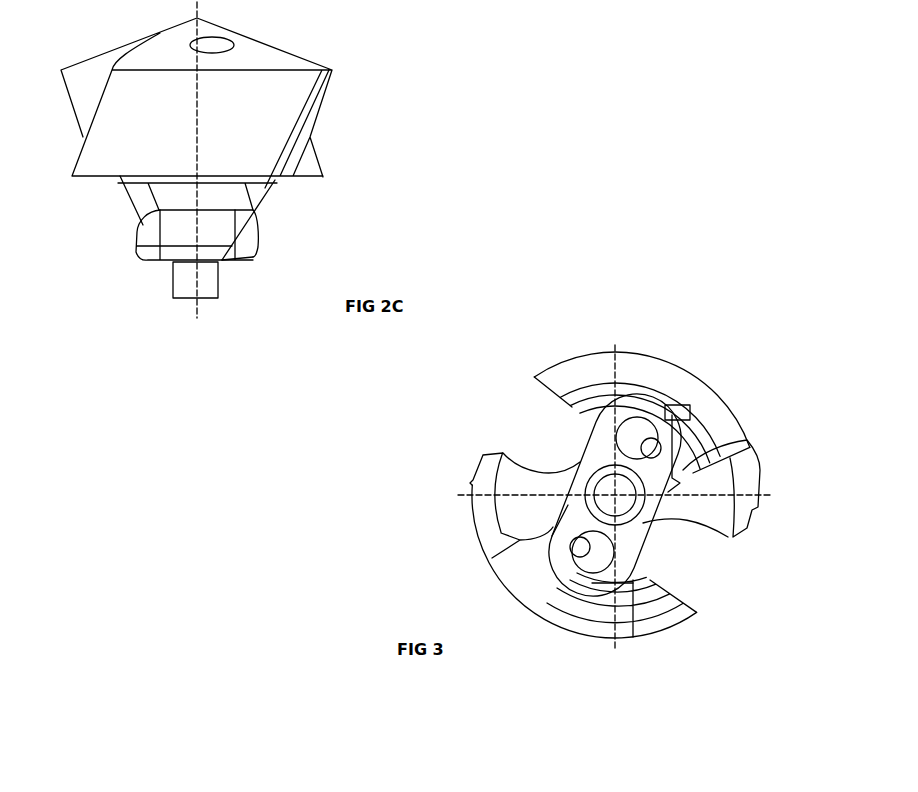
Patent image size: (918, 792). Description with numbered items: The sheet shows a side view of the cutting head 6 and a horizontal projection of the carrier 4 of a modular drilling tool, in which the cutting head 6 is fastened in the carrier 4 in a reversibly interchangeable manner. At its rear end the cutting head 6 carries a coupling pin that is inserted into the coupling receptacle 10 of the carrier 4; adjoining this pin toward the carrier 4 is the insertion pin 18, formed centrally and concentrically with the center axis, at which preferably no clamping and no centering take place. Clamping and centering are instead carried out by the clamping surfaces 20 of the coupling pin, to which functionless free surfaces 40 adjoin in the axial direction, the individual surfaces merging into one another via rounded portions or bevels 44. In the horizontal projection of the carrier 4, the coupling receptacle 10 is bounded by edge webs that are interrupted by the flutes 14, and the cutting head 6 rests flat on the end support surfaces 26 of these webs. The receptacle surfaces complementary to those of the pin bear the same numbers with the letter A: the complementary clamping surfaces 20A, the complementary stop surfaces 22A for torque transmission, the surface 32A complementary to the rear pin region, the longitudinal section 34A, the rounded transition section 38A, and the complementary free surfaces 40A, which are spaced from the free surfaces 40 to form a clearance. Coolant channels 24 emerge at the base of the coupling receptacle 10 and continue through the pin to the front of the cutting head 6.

In FIG. 3, the carrier 4 is at (383, 465).
In FIG. 2C, the cutting head 6 is at (383, 95).
In FIG. 3, the coupling receptacle 10 is at (607, 437).
In FIG. 3, the flutes 14 is at (533, 435).
In FIG. 2C, the insertion pin 18 is at (207, 283).
In FIG. 2C, the clamping surfaces 20 is at (182, 230).
In FIG. 3, the complementary clamping surfaces 20A is at (610, 428).
In FIG. 3, the complementary stop surfaces 22A is at (693, 447).
In FIG. 3, the coolant channels 24 is at (588, 585).
In FIG. 3, the end support surfaces 26 is at (682, 400).
In FIG. 3, the complementary rear pin region surface 32A is at (603, 592).
In FIG. 3, the complementary longitudinal section 34A is at (553, 492).
In FIG. 3, the complementary transition section 38A is at (672, 380).
In FIG. 2C, the free surfaces 40 is at (218, 196).
In FIG. 3, the complementary free surfaces 40A is at (597, 380).
In FIG. 2C, the bevels 44 is at (215, 252).
In FIG. 3, the bevels 44 is at (685, 432).